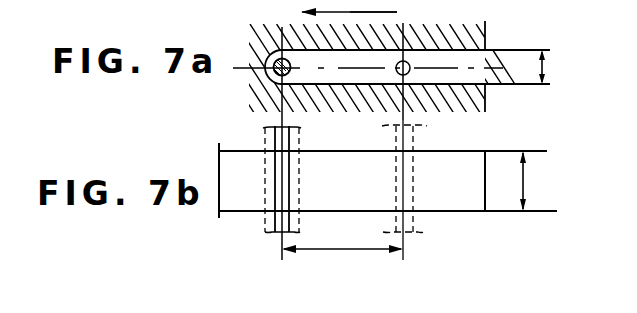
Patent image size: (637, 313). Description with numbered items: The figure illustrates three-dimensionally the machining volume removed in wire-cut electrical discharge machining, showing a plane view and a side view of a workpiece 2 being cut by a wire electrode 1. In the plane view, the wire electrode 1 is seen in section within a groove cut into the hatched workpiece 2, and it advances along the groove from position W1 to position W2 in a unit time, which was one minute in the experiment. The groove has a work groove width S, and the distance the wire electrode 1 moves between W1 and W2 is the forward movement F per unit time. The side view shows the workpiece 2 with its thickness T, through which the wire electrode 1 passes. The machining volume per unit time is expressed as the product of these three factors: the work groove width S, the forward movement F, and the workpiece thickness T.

In FIG. 7a, the wire electrode 1 is at (273, 82).
In FIG. 7b, the wire electrode 1 is at (273, 221).
In FIG. 7a, the workpiece 2 is at (438, 37).
In FIG. 7b, the workpiece 2 is at (448, 199).
In FIG. 7a, the work groove width S is at (550, 67).
In FIG. 7b, the thickness of the workpiece T is at (534, 181).
In FIG. 7b, the forward movement per unit time F is at (342, 261).
In FIG. 7a, the starting position of wire electrode W1 is at (391, 13).
In FIG. 7a, the end position of wire electrode W2 is at (333, 13).